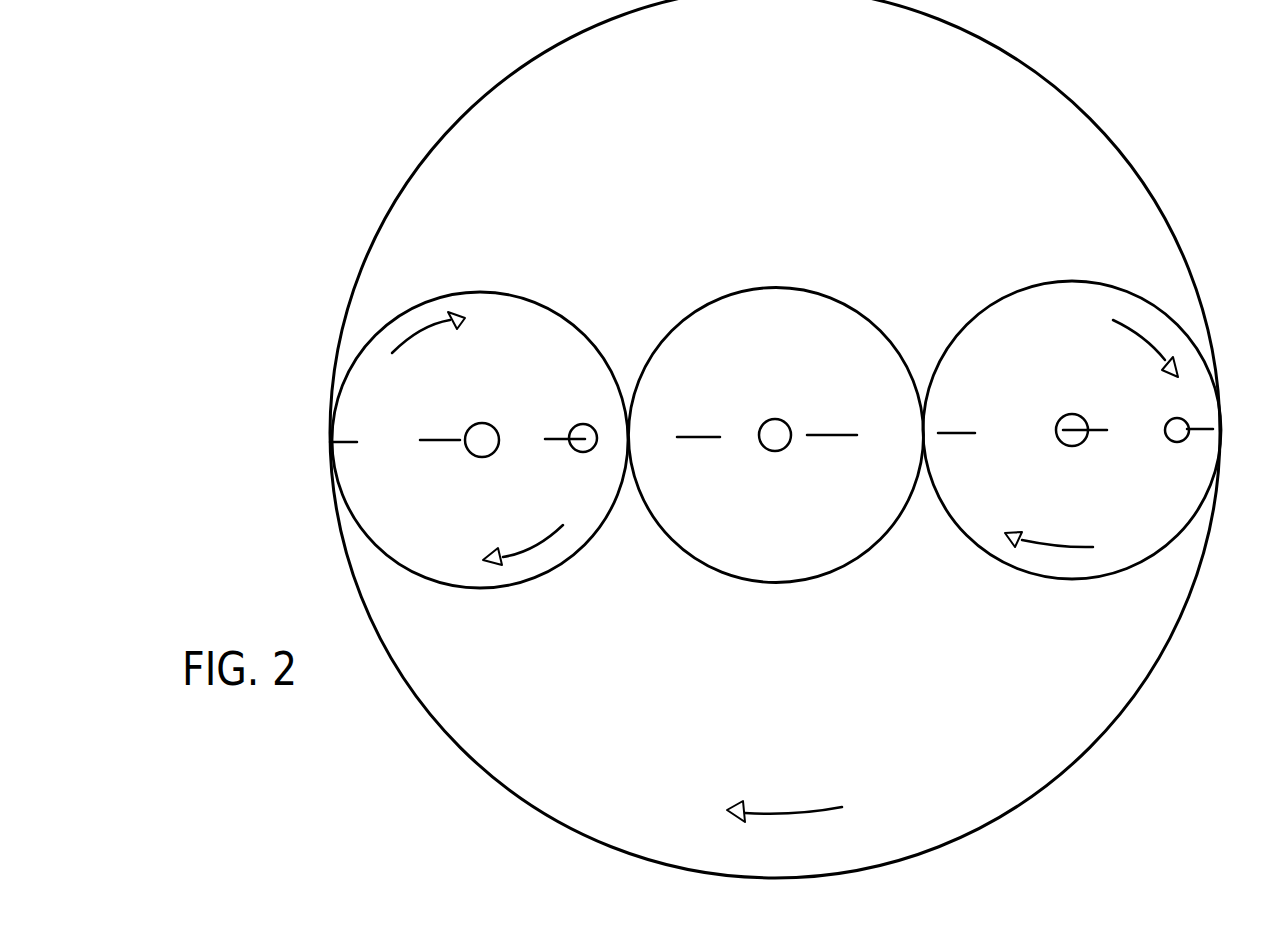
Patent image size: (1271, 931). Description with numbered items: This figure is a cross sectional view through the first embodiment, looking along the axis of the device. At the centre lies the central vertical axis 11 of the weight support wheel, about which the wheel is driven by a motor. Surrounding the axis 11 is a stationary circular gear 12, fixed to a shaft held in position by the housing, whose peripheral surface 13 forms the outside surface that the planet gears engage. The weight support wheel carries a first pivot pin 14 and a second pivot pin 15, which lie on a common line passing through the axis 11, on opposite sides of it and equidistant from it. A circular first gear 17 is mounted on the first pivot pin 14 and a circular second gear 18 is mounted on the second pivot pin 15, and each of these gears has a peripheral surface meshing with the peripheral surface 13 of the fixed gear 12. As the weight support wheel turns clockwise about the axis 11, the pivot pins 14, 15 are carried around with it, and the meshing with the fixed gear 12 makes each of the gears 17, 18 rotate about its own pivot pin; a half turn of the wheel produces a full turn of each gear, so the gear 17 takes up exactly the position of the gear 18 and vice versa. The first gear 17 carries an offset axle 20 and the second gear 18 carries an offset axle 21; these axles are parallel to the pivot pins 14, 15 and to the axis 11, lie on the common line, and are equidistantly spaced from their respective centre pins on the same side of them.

The central vertical axis 11 is at (775, 433).
The stationary circular gear 12 is at (838, 615).
The peripheral surface 13 is at (783, 287).
The first pivot pin 14 is at (482, 423).
The second pivot pin 15 is at (1072, 414).
The first gear 17 is at (553, 537).
The second gear 18 is at (993, 538).
The offset axle 20 is at (583, 424).
The offset axle 21 is at (1177, 418).